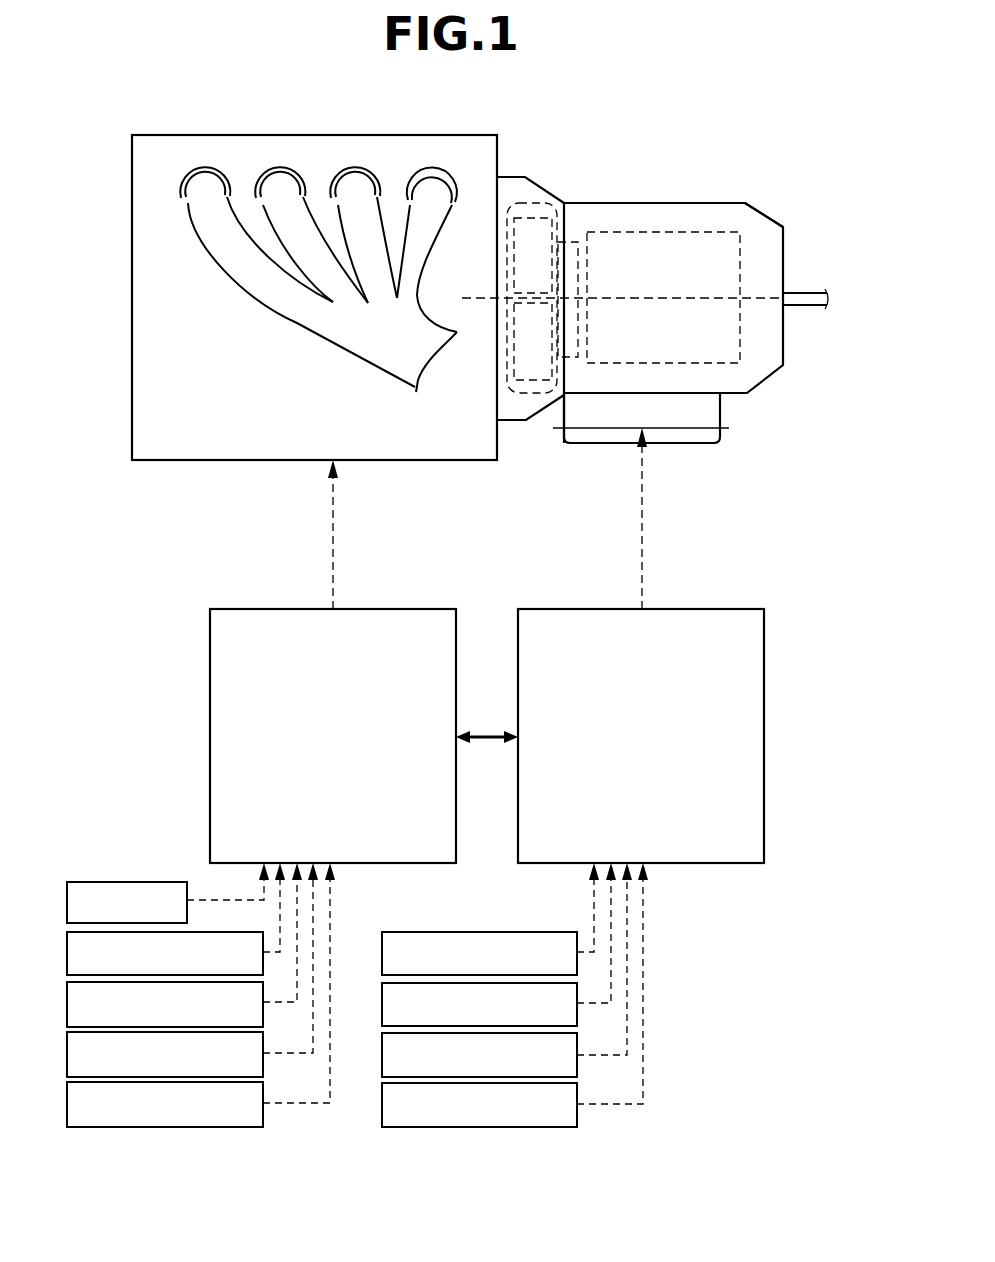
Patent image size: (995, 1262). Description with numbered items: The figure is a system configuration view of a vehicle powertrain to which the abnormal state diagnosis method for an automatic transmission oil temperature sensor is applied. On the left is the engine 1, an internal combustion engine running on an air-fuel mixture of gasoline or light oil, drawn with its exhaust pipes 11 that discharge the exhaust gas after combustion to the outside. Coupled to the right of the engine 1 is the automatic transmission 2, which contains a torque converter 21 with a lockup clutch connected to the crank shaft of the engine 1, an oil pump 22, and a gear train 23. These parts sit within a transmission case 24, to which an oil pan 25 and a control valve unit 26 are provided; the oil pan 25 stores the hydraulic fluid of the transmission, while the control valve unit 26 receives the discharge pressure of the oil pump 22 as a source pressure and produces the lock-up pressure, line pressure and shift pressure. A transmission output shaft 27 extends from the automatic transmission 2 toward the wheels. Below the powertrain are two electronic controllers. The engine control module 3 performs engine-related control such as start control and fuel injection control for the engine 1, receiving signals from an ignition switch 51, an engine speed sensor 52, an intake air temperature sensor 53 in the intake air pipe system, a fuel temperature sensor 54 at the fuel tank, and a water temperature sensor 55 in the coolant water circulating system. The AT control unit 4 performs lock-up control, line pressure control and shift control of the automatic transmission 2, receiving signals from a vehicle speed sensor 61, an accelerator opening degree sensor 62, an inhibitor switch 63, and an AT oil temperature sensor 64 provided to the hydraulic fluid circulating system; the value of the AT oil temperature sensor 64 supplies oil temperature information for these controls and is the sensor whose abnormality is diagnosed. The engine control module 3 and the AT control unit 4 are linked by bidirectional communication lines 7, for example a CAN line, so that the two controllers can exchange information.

The engine 1 is at (334, 131).
The exhaust pipes 11 is at (297, 322).
The automatic transmission 2 is at (632, 198).
The torque converter 21 is at (533, 203).
The oil pump 22 is at (578, 242).
The gear train 23 is at (672, 232).
The transmission case 24 is at (727, 203).
The oil pan 25 is at (705, 437).
The control valve unit 26 is at (705, 417).
The transmission output shaft 27 is at (802, 293).
The engine control module 3 is at (440, 600).
The AT control unit 4 is at (743, 600).
The bidirectional communication lines 7 is at (490, 733).
The ignition switch 51 is at (67, 907).
The engine speed sensor 52 is at (67, 957).
The intake air temperature sensor 53 is at (67, 1007).
The fuel temperature sensor 54 is at (67, 1057).
The water temperature sensor 55 is at (67, 1107).
The vehicle speed sensor 61 is at (382, 959).
The accelerator opening degree sensor 62 is at (382, 1009).
The inhibitor switch 63 is at (382, 1059).
The AT oil temperature sensor 64 is at (382, 1109).